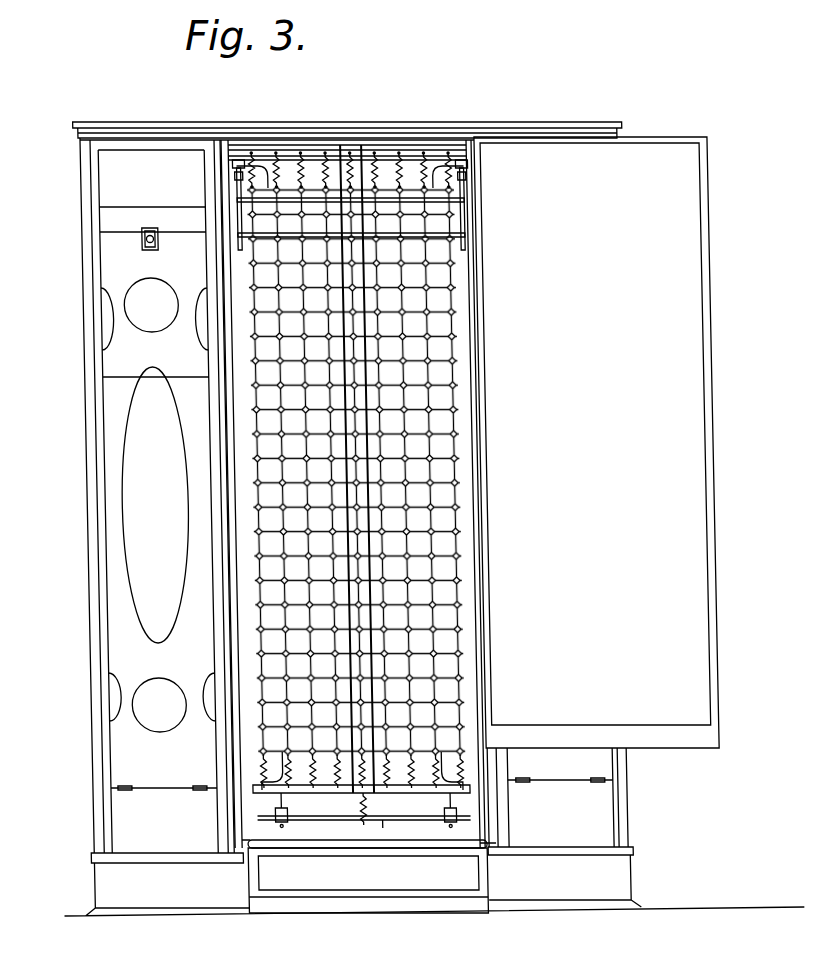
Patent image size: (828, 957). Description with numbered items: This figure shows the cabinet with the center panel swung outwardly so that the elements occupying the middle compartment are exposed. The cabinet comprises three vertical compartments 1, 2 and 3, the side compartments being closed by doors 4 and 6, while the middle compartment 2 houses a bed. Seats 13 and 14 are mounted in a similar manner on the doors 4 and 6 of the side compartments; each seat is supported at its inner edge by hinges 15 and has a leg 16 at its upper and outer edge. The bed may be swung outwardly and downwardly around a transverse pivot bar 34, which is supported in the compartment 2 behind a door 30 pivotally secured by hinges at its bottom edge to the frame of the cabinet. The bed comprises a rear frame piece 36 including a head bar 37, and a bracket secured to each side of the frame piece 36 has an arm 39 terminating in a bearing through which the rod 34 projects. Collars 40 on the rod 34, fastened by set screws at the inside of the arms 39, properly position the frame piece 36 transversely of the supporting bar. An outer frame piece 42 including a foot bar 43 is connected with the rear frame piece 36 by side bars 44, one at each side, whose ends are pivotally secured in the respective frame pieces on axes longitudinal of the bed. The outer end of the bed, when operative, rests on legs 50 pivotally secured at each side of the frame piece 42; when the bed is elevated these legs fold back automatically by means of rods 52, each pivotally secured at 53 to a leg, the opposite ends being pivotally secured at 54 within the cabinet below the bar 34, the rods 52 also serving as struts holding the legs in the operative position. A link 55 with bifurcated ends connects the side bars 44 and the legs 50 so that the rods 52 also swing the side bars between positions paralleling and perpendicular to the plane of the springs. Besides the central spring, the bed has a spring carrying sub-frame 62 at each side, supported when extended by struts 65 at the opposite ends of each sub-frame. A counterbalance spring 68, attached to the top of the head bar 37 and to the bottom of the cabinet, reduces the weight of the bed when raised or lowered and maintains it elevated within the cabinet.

The vertical compartment 1 is at (138, 140).
The middle compartment 2 is at (390, 165).
The vertical compartment 3 is at (617, 832).
The door 4 is at (92, 220).
The door 6 is at (570, 790).
The seat 13 is at (156, 505).
The seat 14 is at (560, 767).
The hinge 15 is at (185, 800).
The leg 16 is at (580, 792).
The door 30 is at (357, 905).
The transverse pivot bar 34 is at (318, 822).
The rear frame piece 36 is at (391, 781).
The head bar 37 is at (356, 812).
The arm 39 is at (268, 824).
The collar 40 is at (275, 814).
The outer frame piece 42 is at (308, 155).
The foot bar 43 is at (273, 143).
The side bar 44 is at (440, 350).
The leg 50 is at (244, 214).
The rod 52 is at (237, 598).
The pivot 53 is at (237, 180).
The pivot 54 is at (237, 840).
The link 55 is at (258, 168).
The spring carrying sub-frame 62 is at (341, 338).
The strut 65 is at (363, 150).
The spring 68 is at (370, 822).